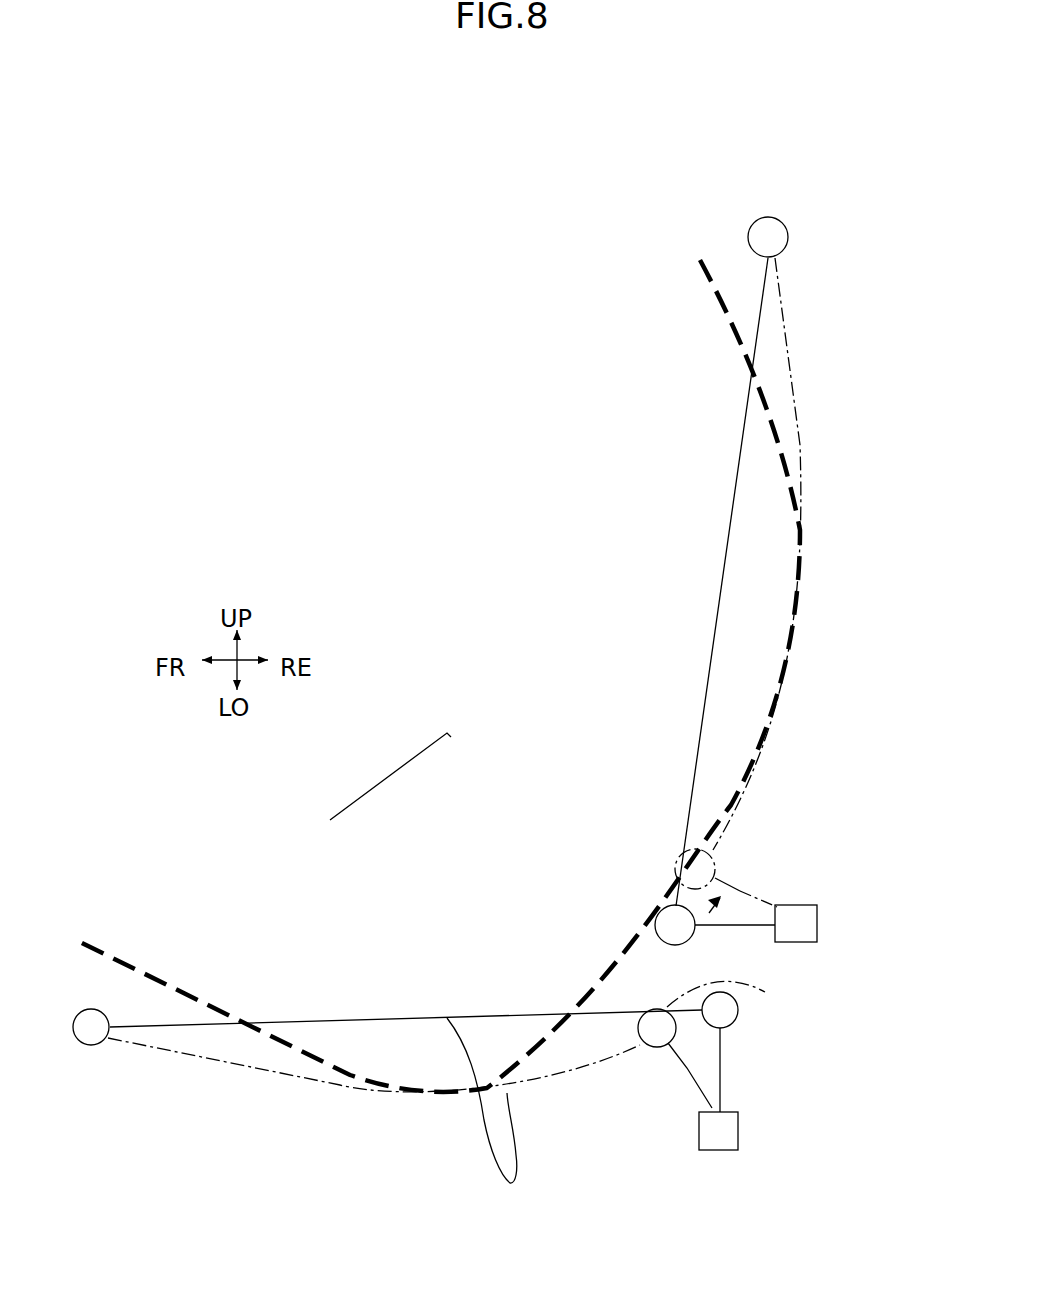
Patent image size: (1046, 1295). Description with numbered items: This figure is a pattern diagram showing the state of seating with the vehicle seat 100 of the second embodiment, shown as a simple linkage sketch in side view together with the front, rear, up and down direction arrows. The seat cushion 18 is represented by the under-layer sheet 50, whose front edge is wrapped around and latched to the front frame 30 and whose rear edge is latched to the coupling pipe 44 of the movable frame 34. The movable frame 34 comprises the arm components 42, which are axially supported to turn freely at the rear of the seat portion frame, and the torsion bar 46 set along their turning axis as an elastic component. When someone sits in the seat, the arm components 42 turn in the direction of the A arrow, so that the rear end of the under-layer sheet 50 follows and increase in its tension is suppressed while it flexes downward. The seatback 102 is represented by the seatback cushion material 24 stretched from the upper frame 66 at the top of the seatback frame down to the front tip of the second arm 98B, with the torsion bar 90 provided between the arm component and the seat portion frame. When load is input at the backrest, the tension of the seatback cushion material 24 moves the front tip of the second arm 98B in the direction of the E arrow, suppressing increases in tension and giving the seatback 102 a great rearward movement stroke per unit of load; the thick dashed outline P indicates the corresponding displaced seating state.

The upper frame 66 is at (773, 238).
The seatback cushion material 24 is at (797, 447).
The second arm 98B is at (758, 921).
The torsion bar 90 is at (800, 905).
The E arrow E is at (720, 916).
The seat cushion 18 is at (388, 946).
The front frame 30 is at (92, 1040).
The under-layer sheet 50 is at (517, 1118).
The vehicle seat 100 is at (388, 776).
The seatback 102 is at (580, 745).
The coupling pipe 44 is at (728, 1008).
The arm components 42 is at (697, 1070).
The torsion bar 46 is at (722, 1150).
The movable frame 34 is at (674, 1115).
The A arrow A is at (692, 1064).
The alternate pose P is at (710, 268).